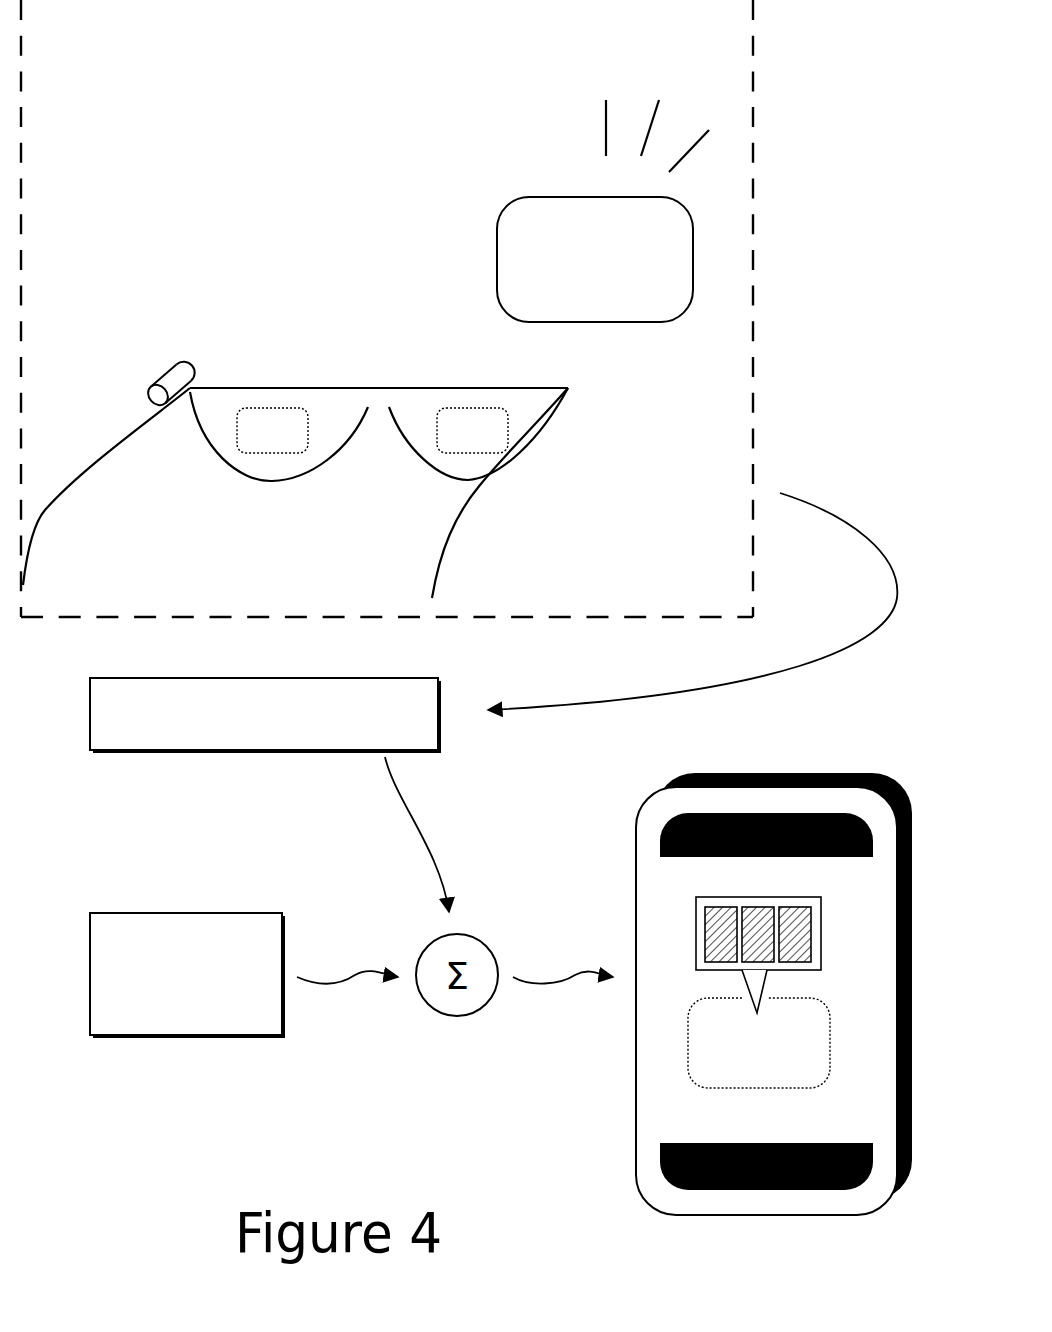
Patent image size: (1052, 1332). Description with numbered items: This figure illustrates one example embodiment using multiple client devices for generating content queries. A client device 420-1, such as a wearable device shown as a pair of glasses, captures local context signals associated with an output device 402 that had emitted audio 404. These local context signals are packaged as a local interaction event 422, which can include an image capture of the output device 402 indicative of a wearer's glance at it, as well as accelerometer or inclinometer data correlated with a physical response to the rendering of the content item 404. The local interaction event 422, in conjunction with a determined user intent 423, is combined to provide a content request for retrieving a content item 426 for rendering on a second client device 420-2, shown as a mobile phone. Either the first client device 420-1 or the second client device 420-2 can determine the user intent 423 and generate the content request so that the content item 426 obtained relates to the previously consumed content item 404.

The output device 402 is at (595, 259).
The audio 404 is at (592, 88).
The client device 420-1 is at (150, 349).
The second client device 420-2 is at (744, 946).
The local interaction event 422 is at (265, 715).
The user intent 423 is at (187, 975).
The content item 426 is at (688, 899).